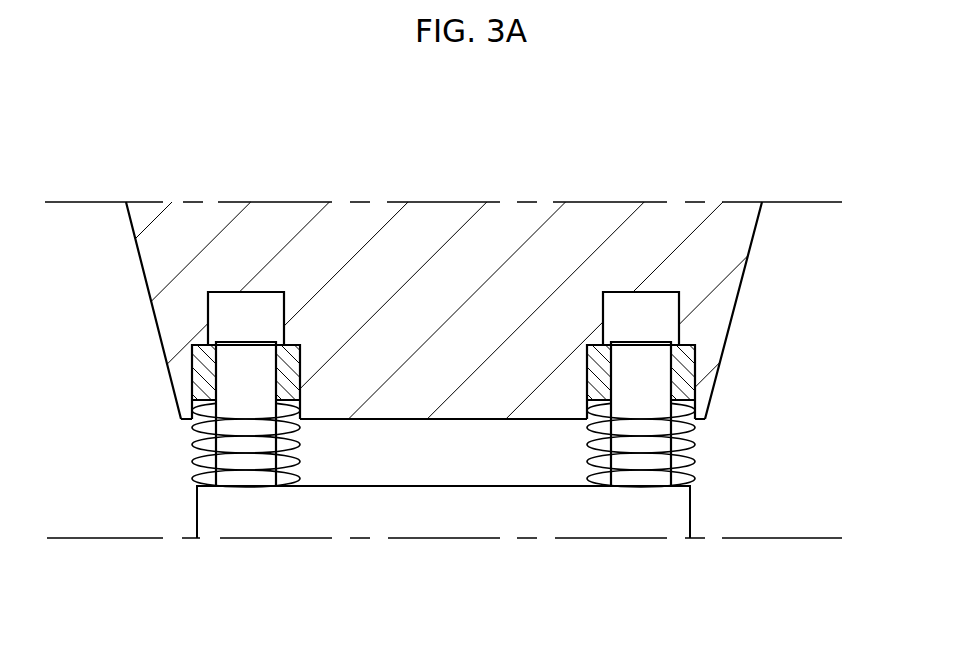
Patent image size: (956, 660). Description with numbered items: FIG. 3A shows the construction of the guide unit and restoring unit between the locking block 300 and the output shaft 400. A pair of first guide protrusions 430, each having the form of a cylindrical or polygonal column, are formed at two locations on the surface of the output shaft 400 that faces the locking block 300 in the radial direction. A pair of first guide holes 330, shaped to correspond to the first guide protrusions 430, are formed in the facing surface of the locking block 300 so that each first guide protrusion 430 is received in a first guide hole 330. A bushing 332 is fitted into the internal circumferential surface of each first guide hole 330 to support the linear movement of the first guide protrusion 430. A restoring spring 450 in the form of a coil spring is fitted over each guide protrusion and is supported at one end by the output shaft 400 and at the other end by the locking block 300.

The locking block 300 is at (438, 245).
The first guide hole 330 is at (208, 314).
The bushing 332 is at (203, 370).
The output shaft 400 is at (442, 510).
The first guide protrusion 430 is at (238, 408).
The restoring spring 450 is at (193, 477).